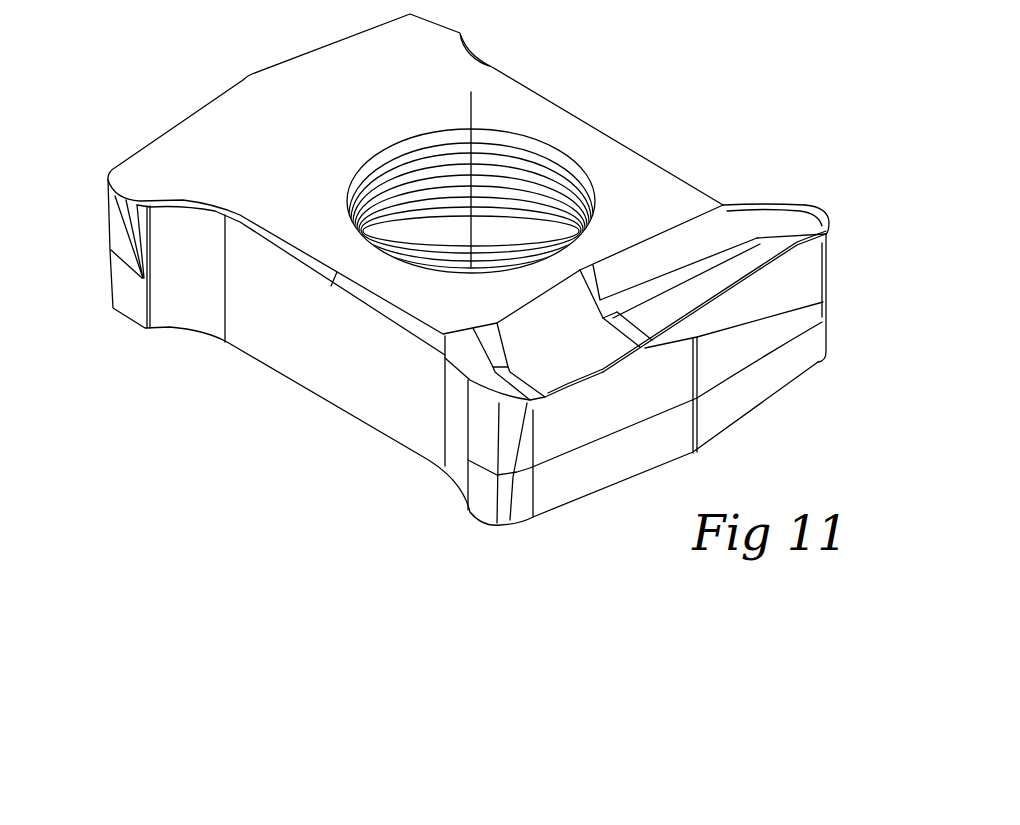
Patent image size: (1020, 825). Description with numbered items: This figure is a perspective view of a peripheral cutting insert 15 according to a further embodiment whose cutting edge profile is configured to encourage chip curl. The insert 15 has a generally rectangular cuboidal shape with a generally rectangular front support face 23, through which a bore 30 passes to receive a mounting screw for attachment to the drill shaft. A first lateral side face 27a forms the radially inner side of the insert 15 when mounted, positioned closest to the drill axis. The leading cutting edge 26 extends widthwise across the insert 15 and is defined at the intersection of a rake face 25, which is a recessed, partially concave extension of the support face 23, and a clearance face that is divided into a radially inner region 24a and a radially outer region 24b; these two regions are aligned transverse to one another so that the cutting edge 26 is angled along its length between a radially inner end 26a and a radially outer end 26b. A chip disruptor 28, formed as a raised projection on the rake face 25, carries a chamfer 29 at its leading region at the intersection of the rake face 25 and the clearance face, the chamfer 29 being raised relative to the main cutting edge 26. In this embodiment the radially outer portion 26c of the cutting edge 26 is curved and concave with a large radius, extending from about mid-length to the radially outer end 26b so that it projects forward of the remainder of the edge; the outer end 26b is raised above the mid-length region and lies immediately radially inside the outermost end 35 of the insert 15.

The peripheral insert 15 is at (590, 97).
The front support face 23 is at (358, 117).
The bore 30 is at (383, 190).
The rake face 25 is at (687, 243).
The outermost end 35 is at (831, 214).
The radially outer end 26b is at (830, 238).
The radially outer portion 26c is at (787, 272).
The cutting edge 26 is at (742, 310).
The chamfer 29 is at (592, 380).
The radially inner end 26a is at (532, 400).
The chip disruptor 28 is at (537, 327).
The first lateral side face 27a is at (300, 347).
The radially inner region 24a is at (610, 468).
The radially outer region 24b is at (772, 378).